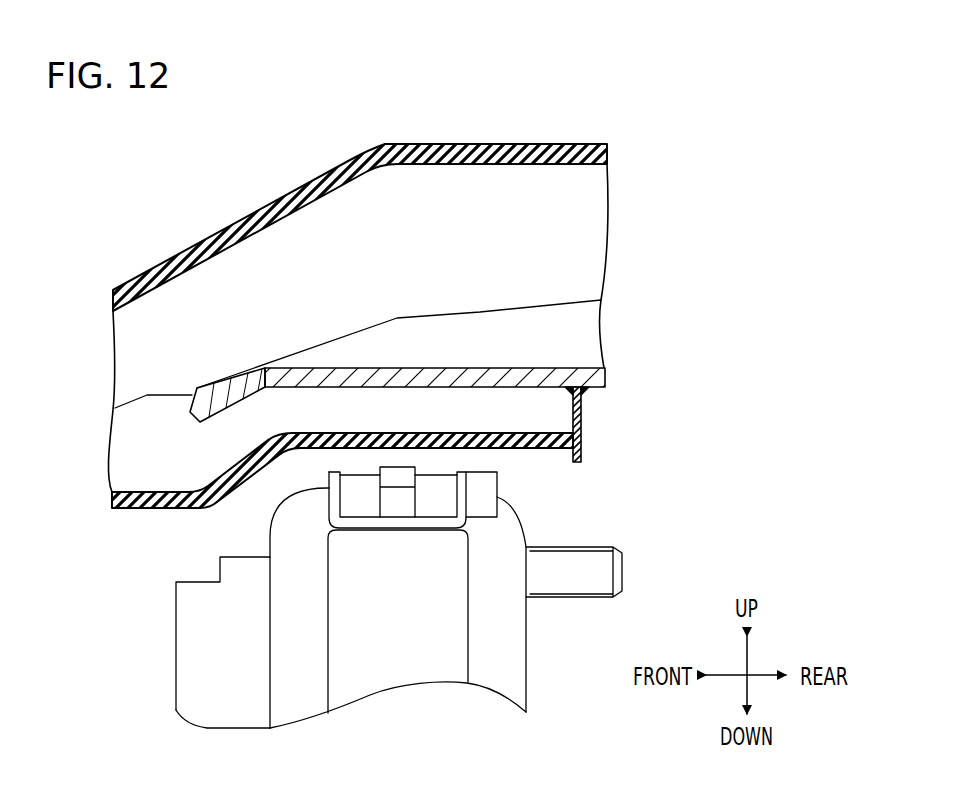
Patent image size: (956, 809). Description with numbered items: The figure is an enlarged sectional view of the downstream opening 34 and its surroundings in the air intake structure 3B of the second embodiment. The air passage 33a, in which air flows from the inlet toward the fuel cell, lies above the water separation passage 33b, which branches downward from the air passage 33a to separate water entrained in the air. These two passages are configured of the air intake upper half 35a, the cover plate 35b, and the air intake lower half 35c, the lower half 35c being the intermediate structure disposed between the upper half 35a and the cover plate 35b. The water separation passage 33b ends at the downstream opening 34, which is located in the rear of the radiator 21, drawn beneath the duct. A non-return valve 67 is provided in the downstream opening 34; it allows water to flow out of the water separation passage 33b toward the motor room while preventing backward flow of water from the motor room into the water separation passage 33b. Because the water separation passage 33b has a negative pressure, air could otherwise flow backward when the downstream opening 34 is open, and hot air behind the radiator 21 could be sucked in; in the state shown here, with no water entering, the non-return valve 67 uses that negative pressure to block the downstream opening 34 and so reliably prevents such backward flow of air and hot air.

The air intake structure 3B is at (630, 128).
The radiator 21 is at (526, 638).
The air passage 33a is at (420, 261).
The water separation passage 33b is at (416, 423).
The downstream opening 34 is at (547, 418).
The air intake upper half 35a is at (607, 152).
The cover plate 35b is at (503, 450).
The air intake lower half 35c is at (605, 376).
The non-return valve 67 is at (581, 428).